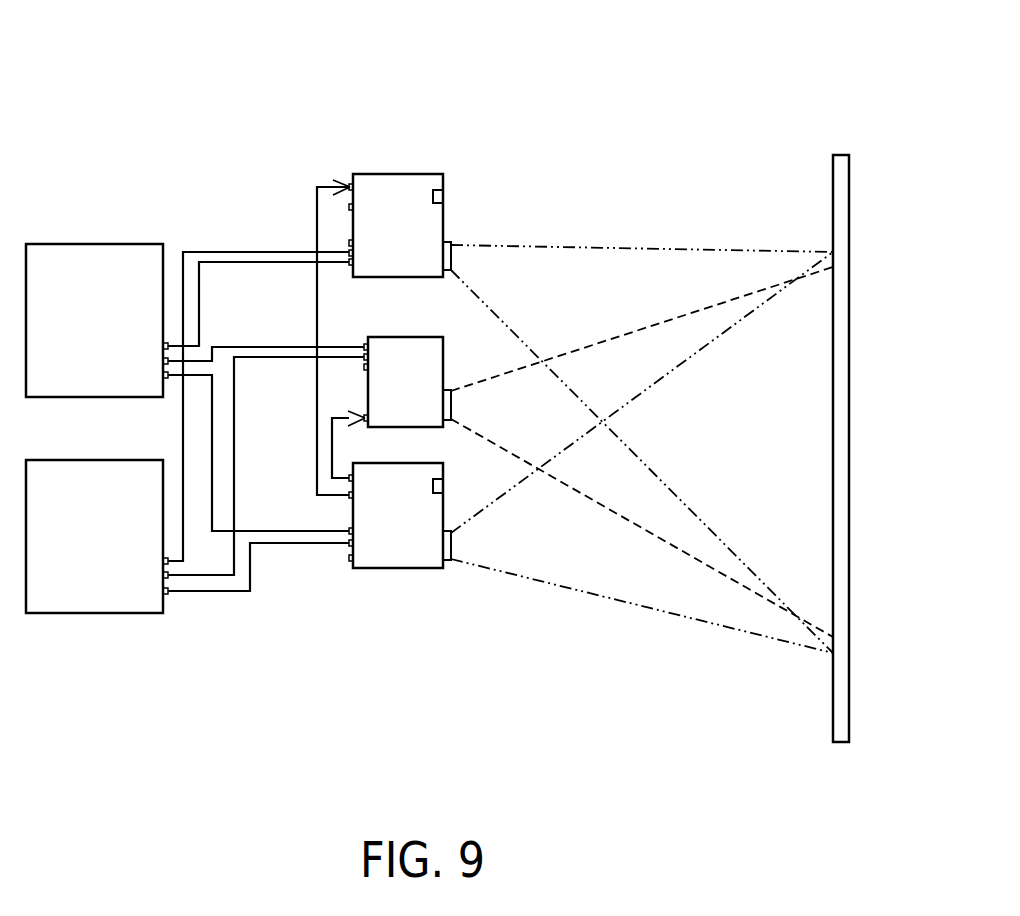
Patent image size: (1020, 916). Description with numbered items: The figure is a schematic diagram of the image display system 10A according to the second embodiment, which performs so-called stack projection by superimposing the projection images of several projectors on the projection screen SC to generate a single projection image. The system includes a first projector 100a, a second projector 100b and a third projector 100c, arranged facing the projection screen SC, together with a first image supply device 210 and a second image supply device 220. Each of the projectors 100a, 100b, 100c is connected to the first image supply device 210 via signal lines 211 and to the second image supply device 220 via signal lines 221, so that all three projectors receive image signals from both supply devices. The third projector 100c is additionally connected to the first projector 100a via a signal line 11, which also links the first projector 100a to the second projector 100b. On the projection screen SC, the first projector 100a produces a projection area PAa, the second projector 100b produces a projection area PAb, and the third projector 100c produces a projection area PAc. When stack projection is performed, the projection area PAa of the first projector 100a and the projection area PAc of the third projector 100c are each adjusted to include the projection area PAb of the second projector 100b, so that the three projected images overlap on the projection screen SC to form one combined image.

The image display system 10A is at (140, 70).
The first image supply device 210 is at (72, 244).
The second image supply device 220 is at (72, 460).
The signal line 211 is at (216, 372).
The signal line 221 is at (183, 594).
The signal line 11 is at (331, 457).
The first projector 100a is at (440, 568).
The second projector 100b is at (437, 337).
The third projector 100c is at (437, 174).
The projection area PAa is at (608, 598).
The projection area PAb is at (768, 284).
The projection area PAc is at (665, 246).
The projection screen SC is at (840, 155).